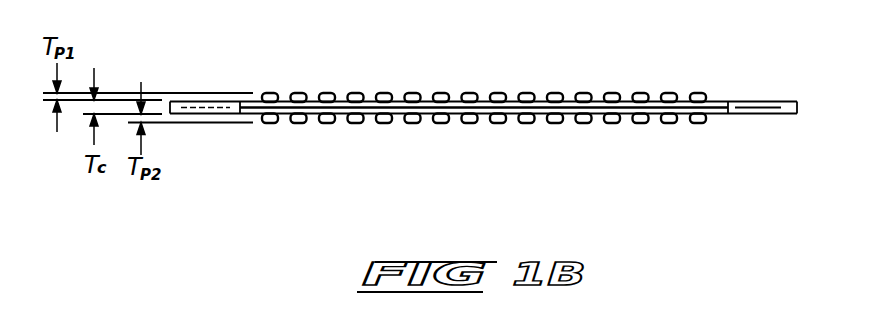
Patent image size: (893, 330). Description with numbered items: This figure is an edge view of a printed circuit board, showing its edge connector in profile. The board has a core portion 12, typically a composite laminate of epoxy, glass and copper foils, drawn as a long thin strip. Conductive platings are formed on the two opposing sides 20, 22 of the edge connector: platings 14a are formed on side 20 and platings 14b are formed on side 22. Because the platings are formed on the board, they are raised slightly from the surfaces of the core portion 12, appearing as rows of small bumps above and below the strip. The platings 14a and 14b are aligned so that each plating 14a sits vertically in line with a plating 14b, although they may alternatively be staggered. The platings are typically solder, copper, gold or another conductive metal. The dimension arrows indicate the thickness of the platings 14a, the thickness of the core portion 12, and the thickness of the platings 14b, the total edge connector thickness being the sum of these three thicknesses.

The core portion 12 is at (797, 107).
The platings 14a is at (356, 93).
The platings 14b is at (440, 125).
The side 20 is at (716, 100).
The side 22 is at (715, 115).